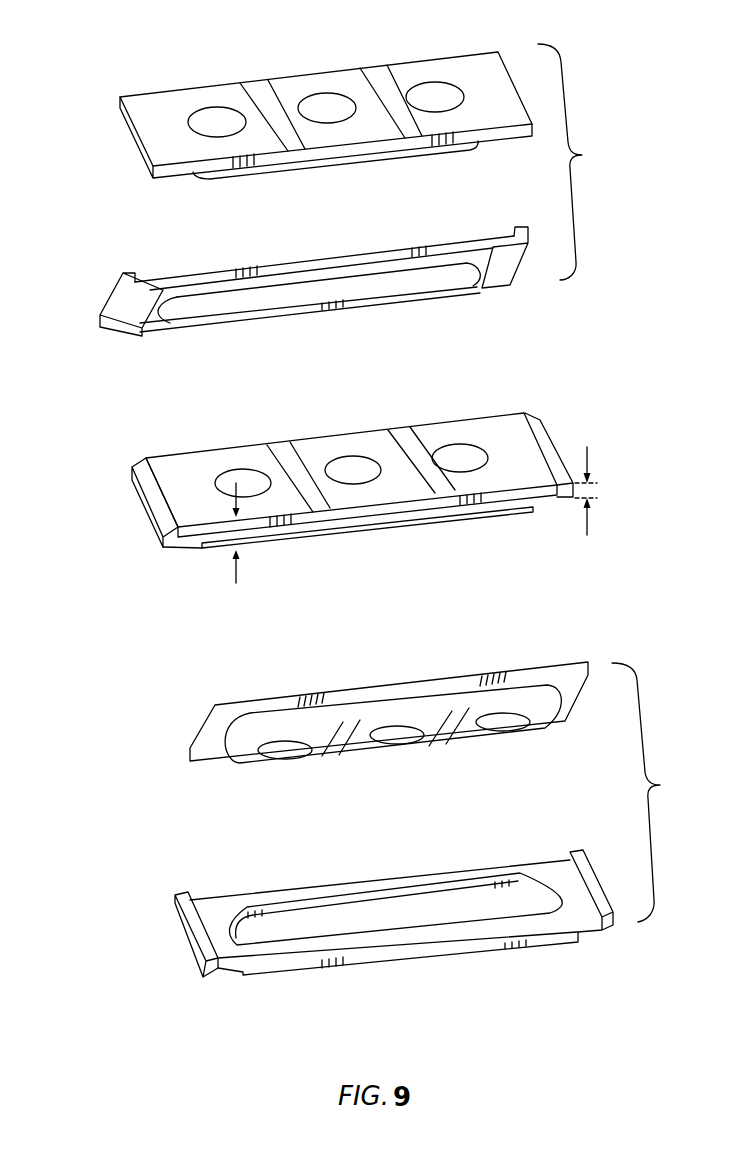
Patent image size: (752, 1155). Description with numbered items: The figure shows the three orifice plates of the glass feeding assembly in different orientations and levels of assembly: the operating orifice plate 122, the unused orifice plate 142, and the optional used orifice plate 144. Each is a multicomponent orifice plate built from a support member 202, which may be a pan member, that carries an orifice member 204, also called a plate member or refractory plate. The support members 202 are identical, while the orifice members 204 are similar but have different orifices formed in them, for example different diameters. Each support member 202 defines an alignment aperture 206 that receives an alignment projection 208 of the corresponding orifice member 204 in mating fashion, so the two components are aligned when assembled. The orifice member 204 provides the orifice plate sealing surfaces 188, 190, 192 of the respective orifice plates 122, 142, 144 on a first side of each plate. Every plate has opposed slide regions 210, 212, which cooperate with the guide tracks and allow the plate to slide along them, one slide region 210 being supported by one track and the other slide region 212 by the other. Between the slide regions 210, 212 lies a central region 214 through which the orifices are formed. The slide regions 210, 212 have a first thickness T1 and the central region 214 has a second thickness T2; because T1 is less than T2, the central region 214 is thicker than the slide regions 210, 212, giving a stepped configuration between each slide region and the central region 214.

The orifice plate 122 is at (615, 455).
The unused orifice plate 142 is at (581, 162).
The used orifice plate 144 is at (656, 792).
The orifice plate sealing surface 188 is at (503, 470).
The orifice plate sealing surface 190 is at (383, 72).
The orifice plate sealing surface 192 is at (247, 702).
The support member 202 is at (223, 275).
The orifice member 204 is at (262, 83).
The alignment aperture 206 is at (260, 303).
The alignment projection 208 is at (365, 162).
The slide region 210 is at (120, 338).
The slide region 212 is at (502, 295).
The central region 214 is at (408, 320).
The first thickness T1 is at (587, 527).
The second thickness T2 is at (240, 567).